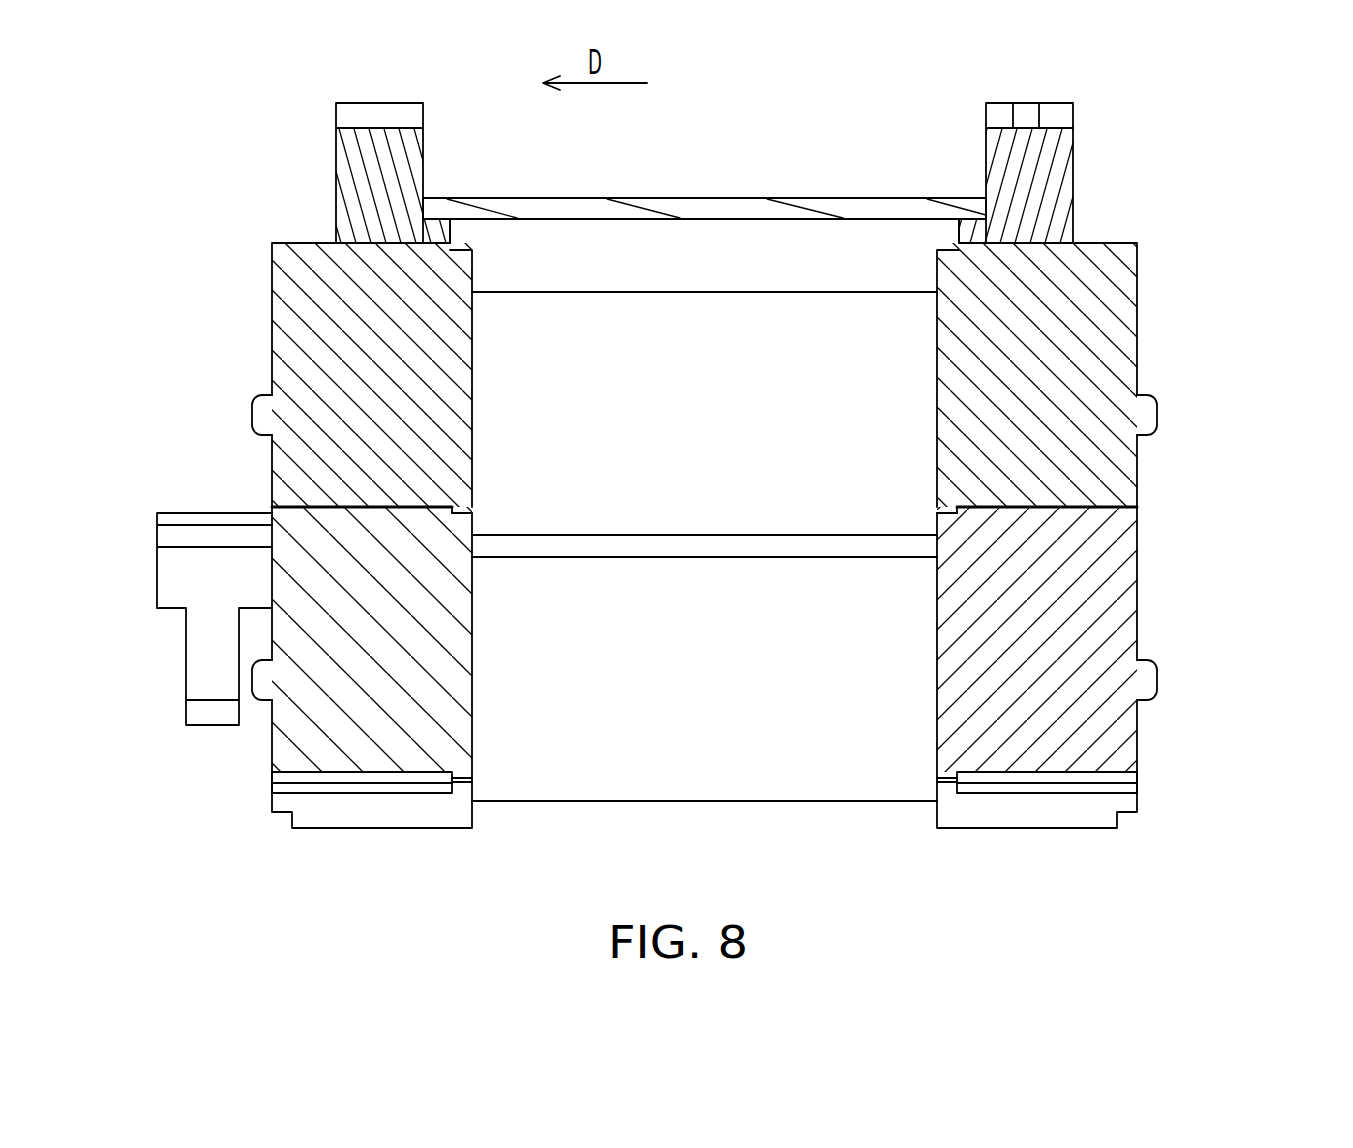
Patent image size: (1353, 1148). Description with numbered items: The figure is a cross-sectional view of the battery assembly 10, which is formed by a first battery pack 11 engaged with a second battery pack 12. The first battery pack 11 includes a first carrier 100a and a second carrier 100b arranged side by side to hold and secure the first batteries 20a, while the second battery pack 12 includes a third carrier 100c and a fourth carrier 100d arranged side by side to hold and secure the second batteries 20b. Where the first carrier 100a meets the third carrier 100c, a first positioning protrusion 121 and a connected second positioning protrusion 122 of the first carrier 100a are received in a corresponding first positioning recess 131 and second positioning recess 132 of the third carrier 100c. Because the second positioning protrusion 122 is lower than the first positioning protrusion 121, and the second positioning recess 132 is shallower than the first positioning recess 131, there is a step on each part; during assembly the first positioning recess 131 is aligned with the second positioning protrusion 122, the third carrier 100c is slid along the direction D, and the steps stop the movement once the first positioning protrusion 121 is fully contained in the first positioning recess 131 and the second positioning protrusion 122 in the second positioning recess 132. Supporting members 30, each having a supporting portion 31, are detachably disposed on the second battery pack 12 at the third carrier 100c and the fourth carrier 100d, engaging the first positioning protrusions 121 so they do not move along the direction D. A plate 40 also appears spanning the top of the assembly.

The battery assembly 10 is at (1313, 895).
The first battery pack 11 is at (1193, 642).
The second battery pack 12 is at (1193, 347).
The first batteries 20a is at (818, 770).
The second batteries 20b is at (827, 363).
The supporting member 30 is at (383, 142).
The supporting portion 31 is at (438, 230).
The cover plate 40 is at (692, 205).
The first carrier 100a is at (305, 750).
The second carrier 100b is at (1107, 753).
The third carrier 100c is at (312, 258).
The fourth carrier 100d is at (1105, 260).
The first positioning protrusion 121 is at (307, 510).
The second positioning protrusion 122 is at (465, 538).
The first positioning recess 131 is at (385, 528).
The second positioning recess 132 is at (460, 532).